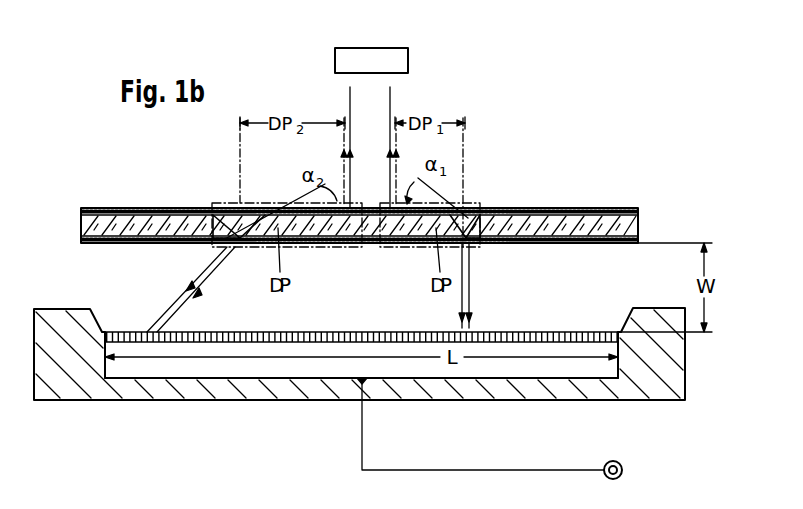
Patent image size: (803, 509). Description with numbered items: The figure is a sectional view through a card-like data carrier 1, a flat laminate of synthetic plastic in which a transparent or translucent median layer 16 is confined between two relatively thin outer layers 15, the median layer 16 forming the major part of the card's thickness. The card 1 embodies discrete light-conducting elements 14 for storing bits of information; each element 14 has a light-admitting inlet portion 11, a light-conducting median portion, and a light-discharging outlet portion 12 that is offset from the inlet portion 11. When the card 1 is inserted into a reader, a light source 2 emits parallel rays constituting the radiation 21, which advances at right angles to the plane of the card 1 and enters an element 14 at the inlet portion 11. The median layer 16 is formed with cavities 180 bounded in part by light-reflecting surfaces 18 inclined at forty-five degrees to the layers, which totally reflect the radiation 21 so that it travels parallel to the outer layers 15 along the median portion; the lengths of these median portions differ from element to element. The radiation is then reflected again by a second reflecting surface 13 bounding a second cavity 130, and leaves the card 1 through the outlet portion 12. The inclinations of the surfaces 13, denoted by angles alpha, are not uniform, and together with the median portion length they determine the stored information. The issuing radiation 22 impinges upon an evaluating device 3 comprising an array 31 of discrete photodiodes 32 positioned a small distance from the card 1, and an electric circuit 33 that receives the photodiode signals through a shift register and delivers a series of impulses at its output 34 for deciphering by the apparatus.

The card-like data carrier 1 is at (574, 190).
The light source 2 is at (408, 56).
The evaluating device 3 is at (513, 400).
The light-admitting inlet portion 11 is at (345, 206).
The light-discharging outlet portion 12 is at (226, 247).
The second reflecting surface 13 is at (217, 212).
The light-conducting element 14 is at (233, 203).
The outer layer 15 is at (592, 208).
The median layer 16 is at (638, 224).
The light-reflecting surface 18 is at (345, 248).
The radiation 21 is at (390, 106).
The issuing radiation 22 is at (200, 273).
The array of photodiodes 31 is at (242, 366).
The photodiode 32 is at (576, 332).
The electric circuit 33 is at (301, 380).
The output 34 is at (620, 462).
The second cavity 130 is at (215, 222).
The cavity 180 is at (382, 246).